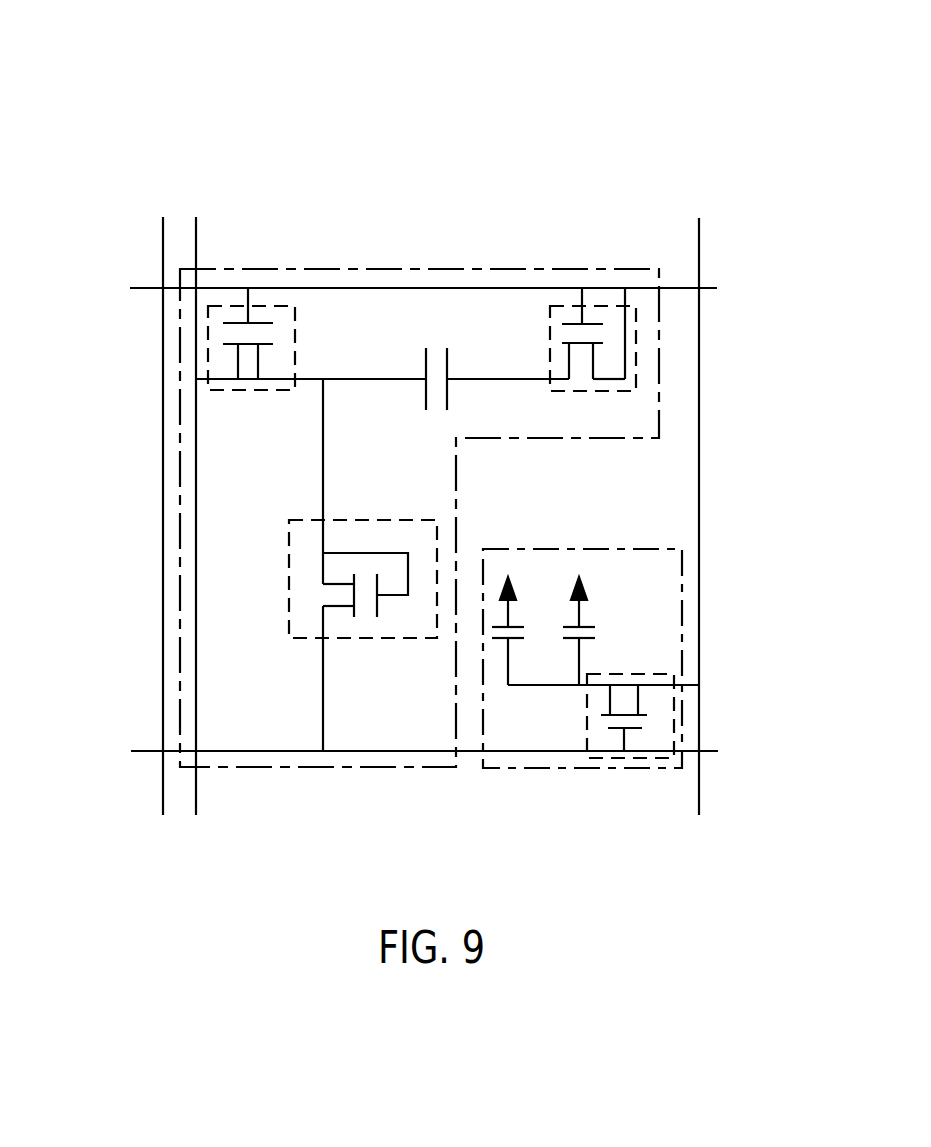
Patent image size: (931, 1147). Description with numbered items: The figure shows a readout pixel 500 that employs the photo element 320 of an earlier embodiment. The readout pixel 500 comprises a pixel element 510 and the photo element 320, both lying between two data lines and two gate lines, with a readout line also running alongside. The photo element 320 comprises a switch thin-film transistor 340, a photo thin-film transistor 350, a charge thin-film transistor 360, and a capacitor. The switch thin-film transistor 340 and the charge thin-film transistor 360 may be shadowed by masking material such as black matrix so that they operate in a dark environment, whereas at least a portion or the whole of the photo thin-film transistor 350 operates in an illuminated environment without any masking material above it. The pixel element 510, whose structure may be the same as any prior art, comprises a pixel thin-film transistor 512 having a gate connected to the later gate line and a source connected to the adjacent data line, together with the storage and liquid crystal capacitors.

The readout pixel 500 is at (392, 106).
The photo element 320 is at (417, 270).
The switch thin-film transistor 340 is at (208, 324).
The photo thin-film transistor 350 is at (289, 580).
The charge thin-film transistor 360 is at (569, 305).
The pixel element 510 is at (682, 567).
The pixel thin-film transistor 512 is at (633, 674).